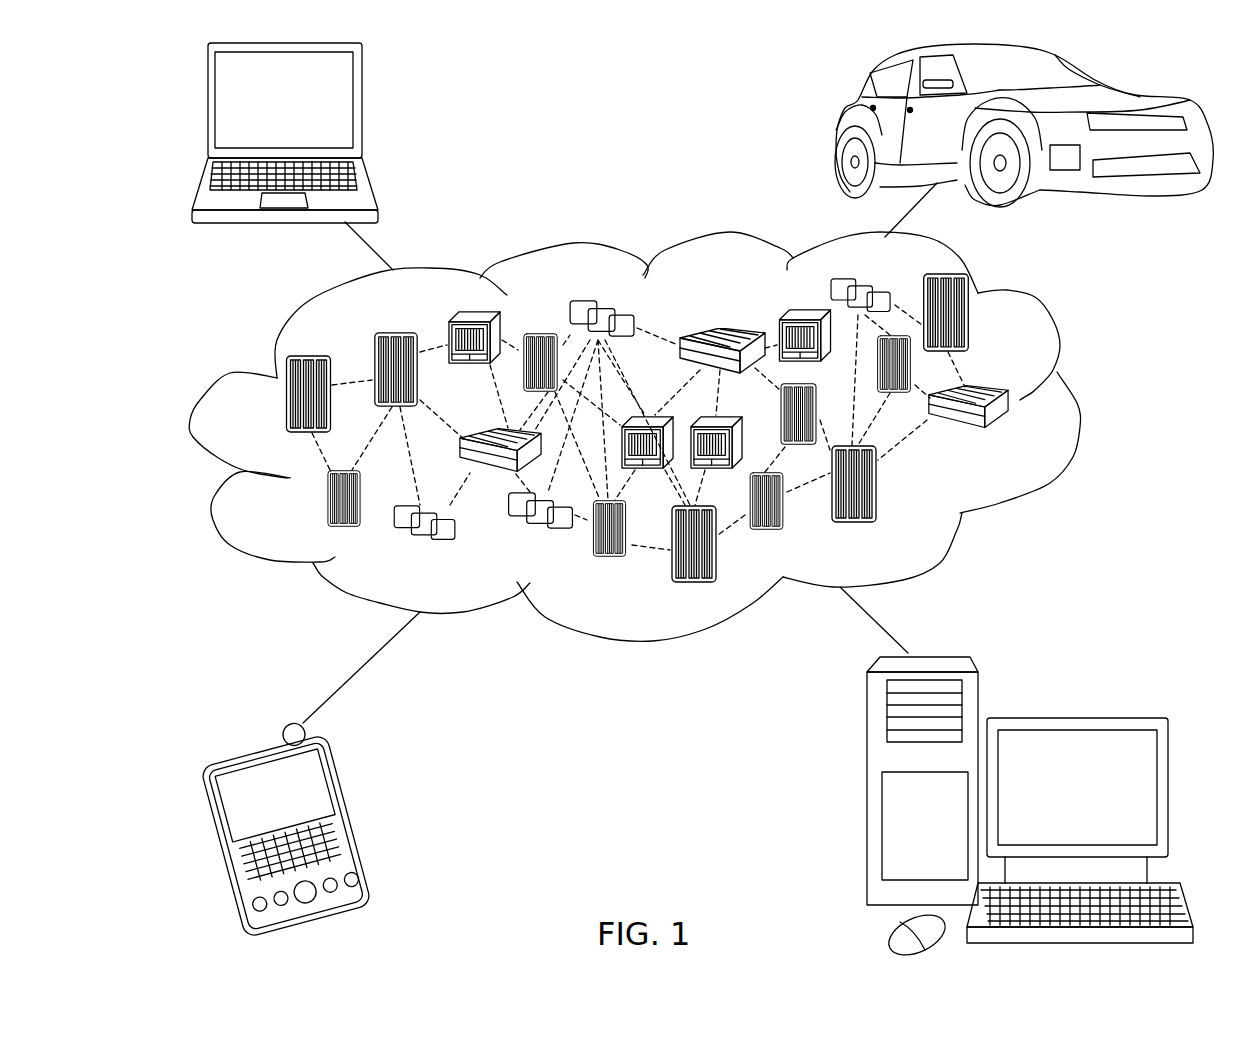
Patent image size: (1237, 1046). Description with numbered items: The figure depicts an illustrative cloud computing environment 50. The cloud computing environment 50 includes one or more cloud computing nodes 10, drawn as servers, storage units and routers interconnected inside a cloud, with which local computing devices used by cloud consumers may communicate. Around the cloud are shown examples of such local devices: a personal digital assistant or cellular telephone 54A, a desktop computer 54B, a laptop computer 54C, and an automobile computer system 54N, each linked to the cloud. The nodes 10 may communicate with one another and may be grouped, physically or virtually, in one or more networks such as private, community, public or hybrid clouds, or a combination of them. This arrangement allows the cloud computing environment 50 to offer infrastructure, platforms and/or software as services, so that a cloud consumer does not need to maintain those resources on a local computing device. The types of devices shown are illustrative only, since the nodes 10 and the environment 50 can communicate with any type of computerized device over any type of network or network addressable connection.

The cloud computing nodes 10 is at (1018, 442).
The cloud computing environment 50 is at (1077, 407).
The personal digital assistant or cellular telephone 54A is at (355, 818).
The desktop computer 54B is at (1073, 718).
The laptop computer 54C is at (362, 110).
The automobile computer system 54N is at (838, 128).